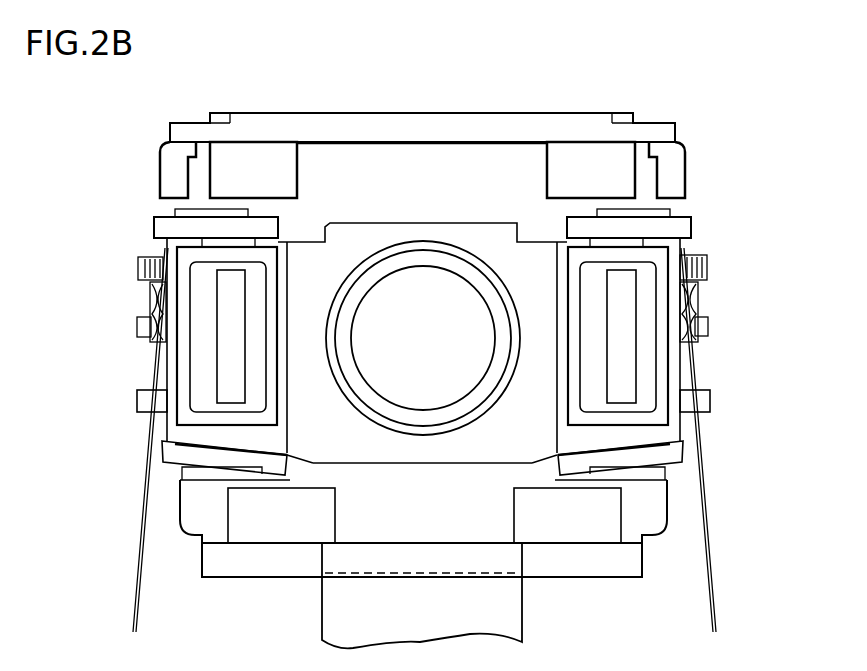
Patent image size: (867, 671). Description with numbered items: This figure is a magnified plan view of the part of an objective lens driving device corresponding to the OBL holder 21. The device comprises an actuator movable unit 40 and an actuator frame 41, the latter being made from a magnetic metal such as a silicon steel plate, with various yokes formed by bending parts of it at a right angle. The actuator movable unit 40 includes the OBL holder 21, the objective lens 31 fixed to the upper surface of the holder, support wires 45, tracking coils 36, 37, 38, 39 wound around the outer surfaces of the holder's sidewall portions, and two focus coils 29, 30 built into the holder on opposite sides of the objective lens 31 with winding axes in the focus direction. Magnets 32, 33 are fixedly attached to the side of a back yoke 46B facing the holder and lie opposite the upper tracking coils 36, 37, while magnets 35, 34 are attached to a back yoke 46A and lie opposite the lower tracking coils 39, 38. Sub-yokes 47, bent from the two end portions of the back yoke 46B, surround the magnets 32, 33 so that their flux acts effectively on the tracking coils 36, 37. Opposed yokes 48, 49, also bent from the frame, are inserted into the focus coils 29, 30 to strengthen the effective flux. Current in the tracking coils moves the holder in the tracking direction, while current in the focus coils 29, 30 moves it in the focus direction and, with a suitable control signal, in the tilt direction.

The OBL holder 21 is at (422, 348).
The focus coil 29 is at (668, 362).
The focus coil 30 is at (177, 362).
The objective lens 31 is at (423, 338).
The magnet 32 is at (238, 151).
The magnet 33 is at (608, 151).
The magnet 34 is at (558, 533).
The magnet 35 is at (239, 533).
The tracking coil 36 is at (155, 231).
The tracking coil 37 is at (692, 231).
The tracking coil 38 is at (687, 447).
The tracking coil 39 is at (162, 458).
The actuator movable unit 40 is at (423, 360).
The actuator frame 41 is at (724, 102).
The support wire 45 is at (713, 556).
The back yoke 46A is at (393, 557).
The back yoke 46B is at (404, 124).
The sub-yoke 47 is at (162, 162).
The opposed yoke 48 is at (620, 302).
The opposed yoke 49 is at (228, 297).